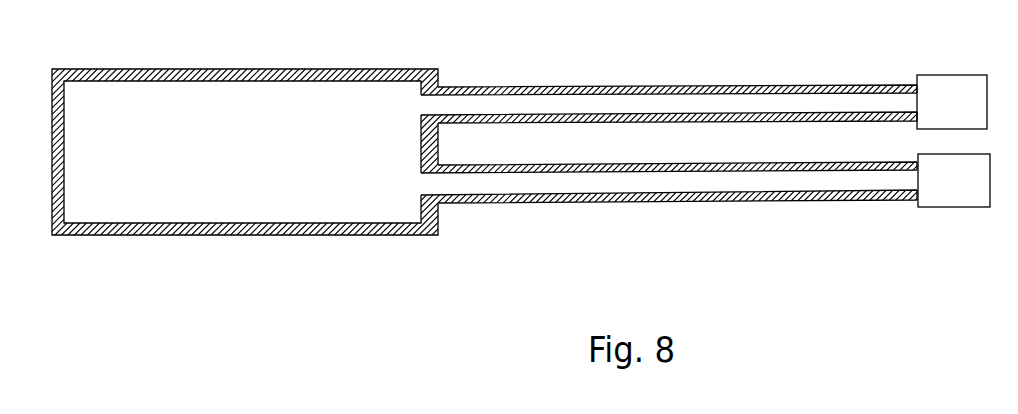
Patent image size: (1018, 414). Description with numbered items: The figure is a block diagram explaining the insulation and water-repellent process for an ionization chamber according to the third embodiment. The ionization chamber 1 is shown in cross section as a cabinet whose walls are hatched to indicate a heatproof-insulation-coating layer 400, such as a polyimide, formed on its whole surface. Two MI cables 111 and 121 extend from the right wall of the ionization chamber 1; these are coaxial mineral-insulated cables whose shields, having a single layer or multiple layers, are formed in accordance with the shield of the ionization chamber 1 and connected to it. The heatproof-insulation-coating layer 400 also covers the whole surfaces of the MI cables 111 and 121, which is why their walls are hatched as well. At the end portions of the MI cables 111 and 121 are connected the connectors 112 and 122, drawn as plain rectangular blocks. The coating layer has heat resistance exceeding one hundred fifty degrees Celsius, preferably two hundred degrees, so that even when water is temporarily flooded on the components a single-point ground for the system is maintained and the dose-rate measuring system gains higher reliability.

The ionization chamber 1 is at (509, 161).
The heatproof-insulation-coating layer 400 is at (368, 234).
The MI cable 111 is at (555, 93).
The MI cable 121 is at (563, 194).
The connector 112 is at (933, 93).
The connector 122 is at (945, 183).